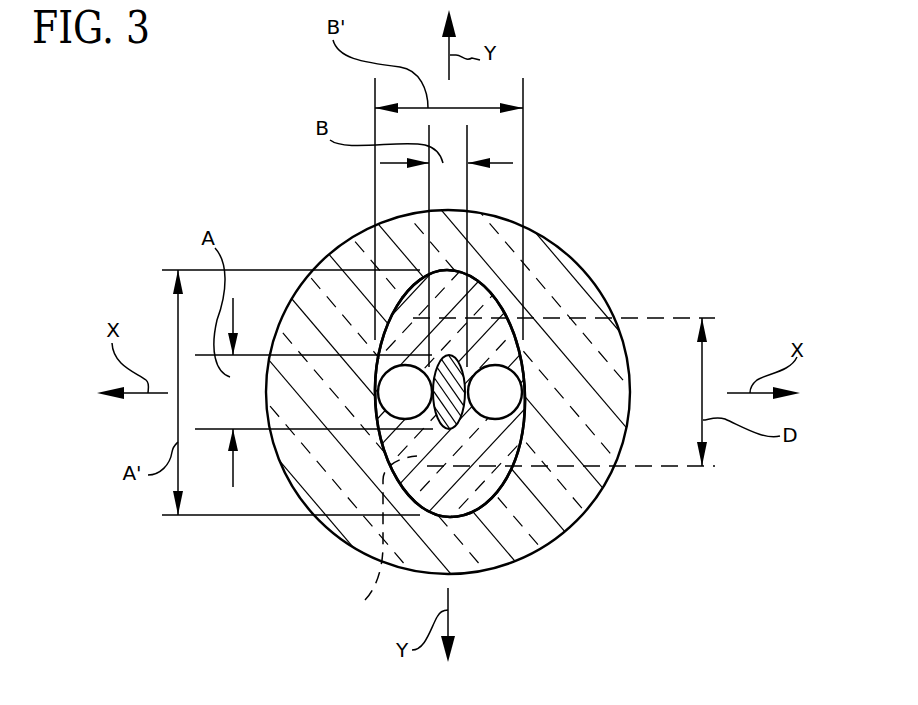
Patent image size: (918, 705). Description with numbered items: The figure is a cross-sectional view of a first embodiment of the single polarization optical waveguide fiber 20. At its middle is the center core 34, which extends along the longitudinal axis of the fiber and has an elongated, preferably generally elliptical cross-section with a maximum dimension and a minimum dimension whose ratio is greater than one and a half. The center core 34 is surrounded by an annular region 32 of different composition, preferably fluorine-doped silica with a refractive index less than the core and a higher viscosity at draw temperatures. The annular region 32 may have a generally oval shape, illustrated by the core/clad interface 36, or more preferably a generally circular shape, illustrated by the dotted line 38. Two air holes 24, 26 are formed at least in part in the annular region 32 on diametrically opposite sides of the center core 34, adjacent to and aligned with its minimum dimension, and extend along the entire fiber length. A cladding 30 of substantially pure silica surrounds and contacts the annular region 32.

The single polarization optical waveguide fiber 20 is at (638, 230).
The hole 24 is at (385, 393).
The hole 26 is at (508, 390).
The cladding 30 is at (600, 482).
The annular region 32 is at (441, 458).
The center core 34 is at (462, 477).
The core/clad interface 36 is at (507, 474).
The dotted line 38 is at (368, 596).